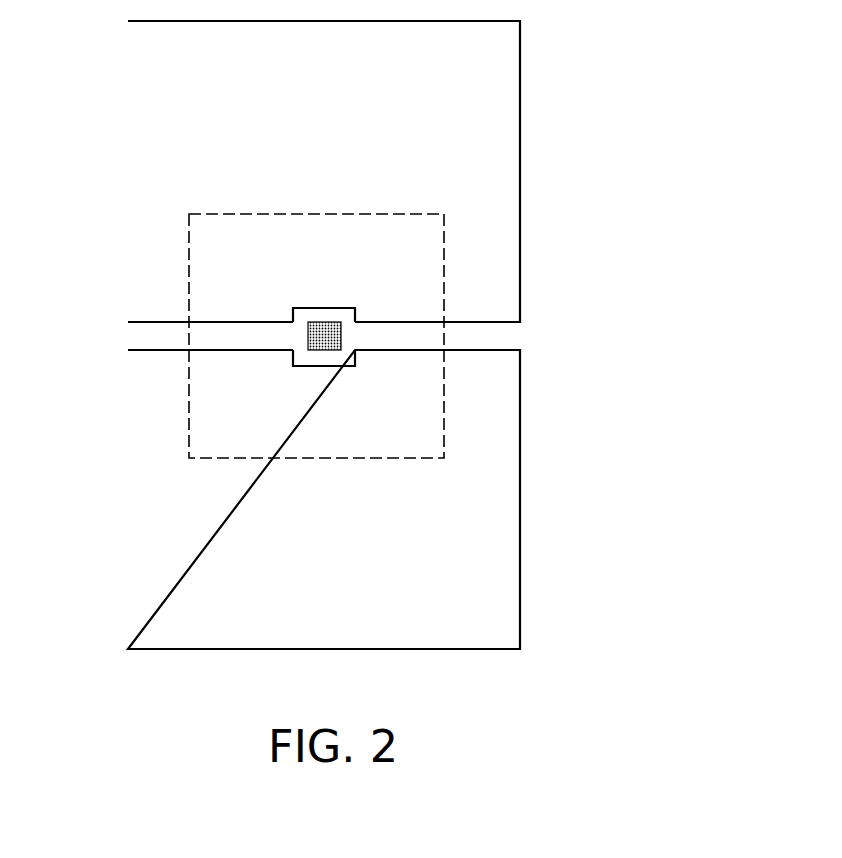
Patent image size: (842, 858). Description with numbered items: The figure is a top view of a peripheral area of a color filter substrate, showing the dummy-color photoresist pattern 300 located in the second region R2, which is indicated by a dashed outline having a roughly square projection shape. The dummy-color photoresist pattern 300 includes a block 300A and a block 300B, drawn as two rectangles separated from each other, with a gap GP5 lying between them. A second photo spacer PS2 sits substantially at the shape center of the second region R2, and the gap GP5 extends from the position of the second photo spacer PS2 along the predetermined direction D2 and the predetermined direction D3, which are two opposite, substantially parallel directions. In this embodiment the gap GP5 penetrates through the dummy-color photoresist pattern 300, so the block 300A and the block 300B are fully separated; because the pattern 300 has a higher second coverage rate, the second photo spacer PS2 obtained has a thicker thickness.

The dummy-color photoresist pattern 300 is at (368, 335).
The block 300A is at (143, 176).
The block 300B is at (143, 504).
The gap GP5 is at (483, 337).
The second photo spacer PS2 is at (325, 338).
The second region R2 is at (189, 274).
The predetermined direction D3 is at (650, 554).
The predetermined direction D2 is at (648, 617).